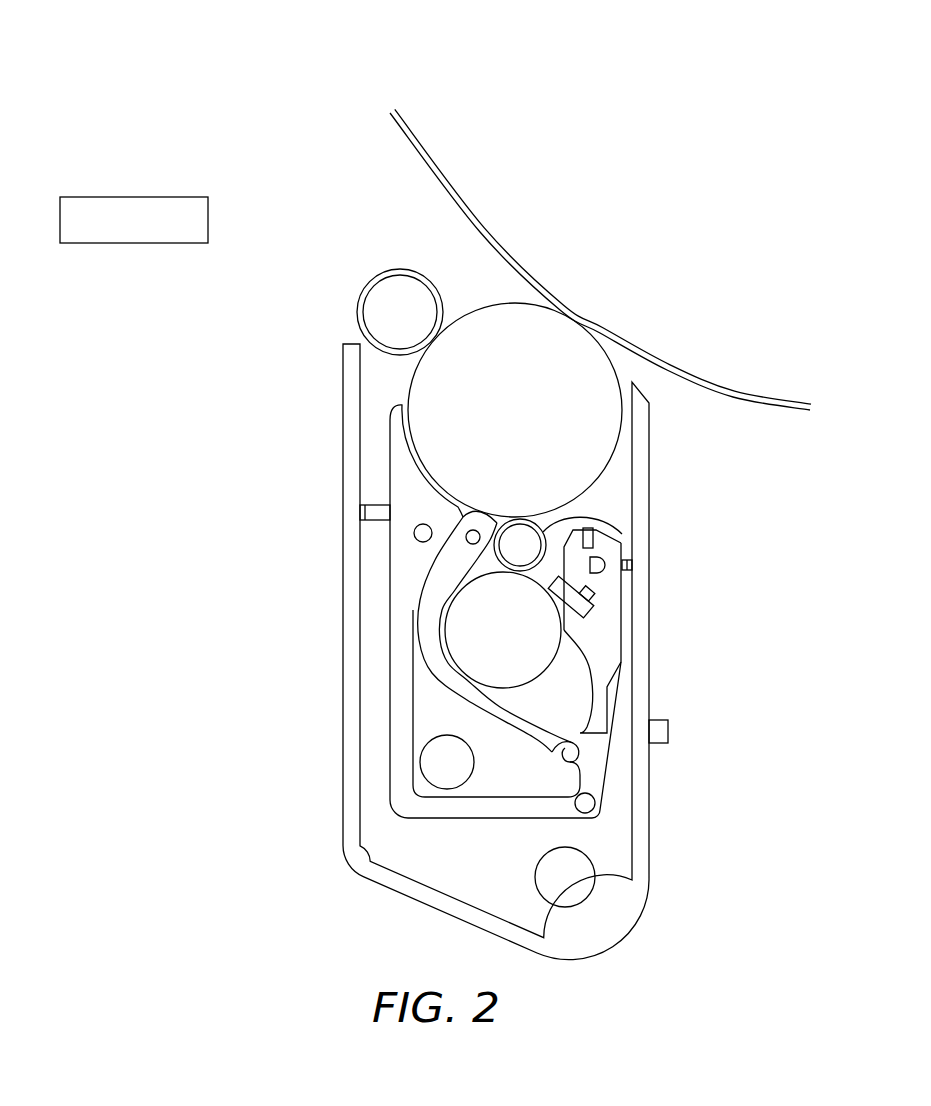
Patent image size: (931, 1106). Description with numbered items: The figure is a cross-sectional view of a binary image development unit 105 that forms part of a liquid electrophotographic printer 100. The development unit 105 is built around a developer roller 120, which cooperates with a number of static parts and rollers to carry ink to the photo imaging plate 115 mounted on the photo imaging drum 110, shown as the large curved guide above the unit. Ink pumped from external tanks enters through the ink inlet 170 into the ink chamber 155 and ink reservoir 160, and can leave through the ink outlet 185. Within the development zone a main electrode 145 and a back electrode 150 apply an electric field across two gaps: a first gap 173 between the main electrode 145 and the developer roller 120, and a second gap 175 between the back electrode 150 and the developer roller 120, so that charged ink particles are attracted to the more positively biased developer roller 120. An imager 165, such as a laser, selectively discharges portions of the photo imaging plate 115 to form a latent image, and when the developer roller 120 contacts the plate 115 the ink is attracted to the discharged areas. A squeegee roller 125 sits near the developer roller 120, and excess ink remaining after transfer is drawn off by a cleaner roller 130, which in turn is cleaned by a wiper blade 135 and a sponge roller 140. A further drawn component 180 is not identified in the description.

The liquid electrophotographic printer 100 is at (206, 70).
The binary image development unit 105 is at (270, 416).
The photo imaging drum 110 is at (636, 241).
The photo imaging plate 115 is at (398, 138).
The developer roller 120 is at (535, 424).
The squeegee roller 125 is at (390, 289).
The cleaner roller 130 is at (622, 534).
The wiper blade 135 is at (545, 578).
The sponge roller 140 is at (543, 647).
The main electrode 145 is at (397, 467).
The back electrode 150 is at (425, 634).
The ink chamber 155 is at (427, 700).
The ink reservoir 160 is at (485, 874).
The imager 165 is at (153, 236).
The ink inlet 170 is at (427, 762).
The first gap 173 is at (400, 396).
The second gap 175 is at (487, 512).
The side wall 180 is at (647, 808).
The ink outlet 185 is at (583, 877).